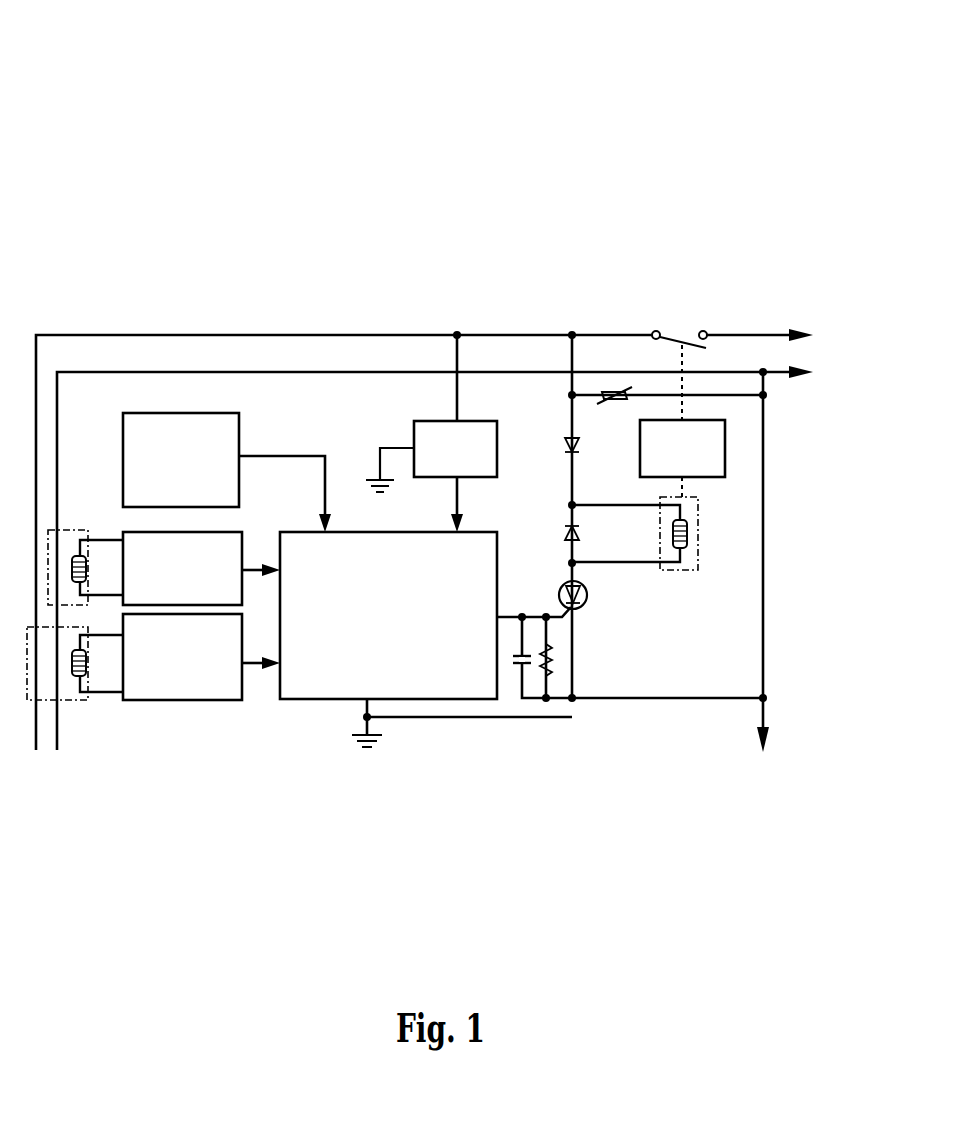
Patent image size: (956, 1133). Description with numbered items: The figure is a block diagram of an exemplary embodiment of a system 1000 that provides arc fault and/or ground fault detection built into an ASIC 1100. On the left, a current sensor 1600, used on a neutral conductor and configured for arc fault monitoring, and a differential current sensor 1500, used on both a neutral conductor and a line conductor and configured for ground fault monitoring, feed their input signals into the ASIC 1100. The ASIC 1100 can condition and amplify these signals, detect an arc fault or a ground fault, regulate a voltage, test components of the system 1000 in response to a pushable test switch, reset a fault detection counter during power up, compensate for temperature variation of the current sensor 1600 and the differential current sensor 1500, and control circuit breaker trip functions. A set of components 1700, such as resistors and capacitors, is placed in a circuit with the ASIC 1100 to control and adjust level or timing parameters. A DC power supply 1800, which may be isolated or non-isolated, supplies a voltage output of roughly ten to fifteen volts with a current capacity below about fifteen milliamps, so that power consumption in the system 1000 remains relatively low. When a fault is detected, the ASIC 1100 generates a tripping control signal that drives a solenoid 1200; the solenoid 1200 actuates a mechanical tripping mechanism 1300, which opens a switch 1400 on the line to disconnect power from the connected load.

The system 1000 is at (136, 51).
The ASIC 1100 is at (388, 615).
The solenoid 1200 is at (638, 550).
The mechanical tripping mechanism 1300 is at (682, 421).
The switch 1400 is at (679, 325).
The differential current sensor 1500 is at (153, 657).
The current sensor 1600 is at (164, 567).
The set of components 1700 is at (227, 472).
The DC power supply 1800 is at (431, 433).